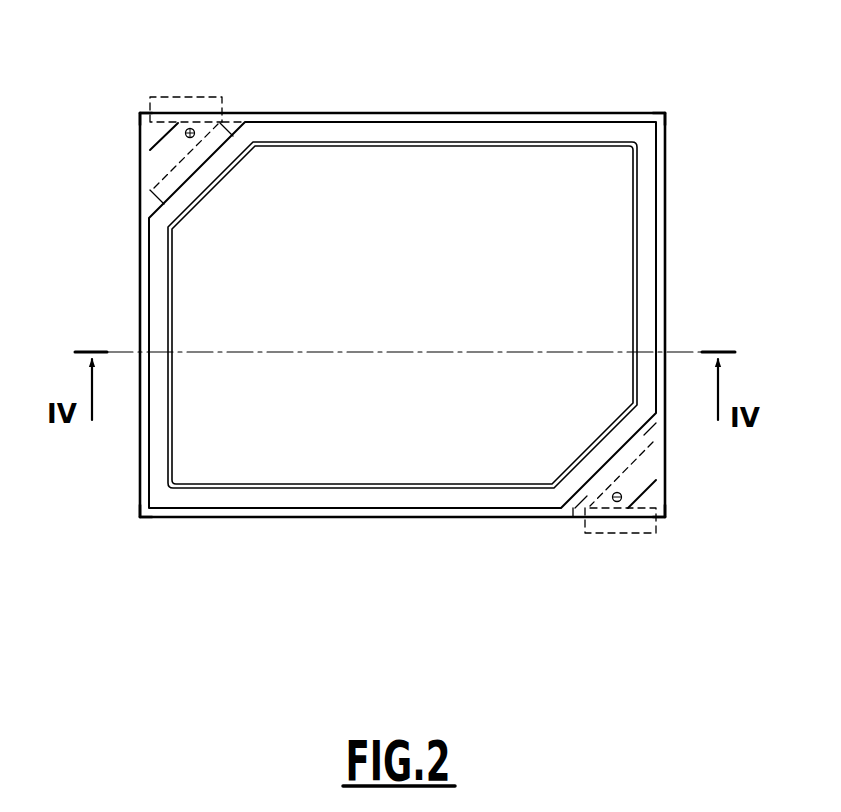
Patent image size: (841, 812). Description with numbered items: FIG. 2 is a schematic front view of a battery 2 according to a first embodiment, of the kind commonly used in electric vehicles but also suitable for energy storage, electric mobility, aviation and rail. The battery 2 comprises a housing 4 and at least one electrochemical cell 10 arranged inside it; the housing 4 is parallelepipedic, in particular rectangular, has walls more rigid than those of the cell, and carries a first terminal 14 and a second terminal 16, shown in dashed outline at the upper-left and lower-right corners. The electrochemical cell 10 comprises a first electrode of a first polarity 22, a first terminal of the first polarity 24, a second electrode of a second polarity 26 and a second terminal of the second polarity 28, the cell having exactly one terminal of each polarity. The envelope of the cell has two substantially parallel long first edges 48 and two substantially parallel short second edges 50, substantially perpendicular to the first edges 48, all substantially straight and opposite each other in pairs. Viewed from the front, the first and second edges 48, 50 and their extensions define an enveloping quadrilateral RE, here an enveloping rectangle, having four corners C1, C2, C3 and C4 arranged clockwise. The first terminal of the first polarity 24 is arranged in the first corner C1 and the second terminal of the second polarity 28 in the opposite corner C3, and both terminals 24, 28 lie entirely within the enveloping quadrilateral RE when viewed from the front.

The battery 2 is at (403, 318).
The housing 4 is at (142, 443).
The electrochemical cell 10 is at (532, 199).
The first terminal 14 is at (196, 97).
The second terminal 16 is at (620, 522).
The first electrode of a first polarity 22 is at (352, 246).
The first terminal of the first polarity 24 is at (170, 150).
The second electrode of a second polarity 26 is at (247, 447).
The second terminal of the second polarity 28 is at (640, 471).
The first edges 48 is at (461, 118).
The second edges 50 is at (143, 300).
The first corner C1 is at (137, 112).
The second corner C2 is at (668, 112).
The third corner C3 is at (668, 516).
The fourth corner C4 is at (138, 519).
The enveloping quadrilateral RE is at (573, 517).